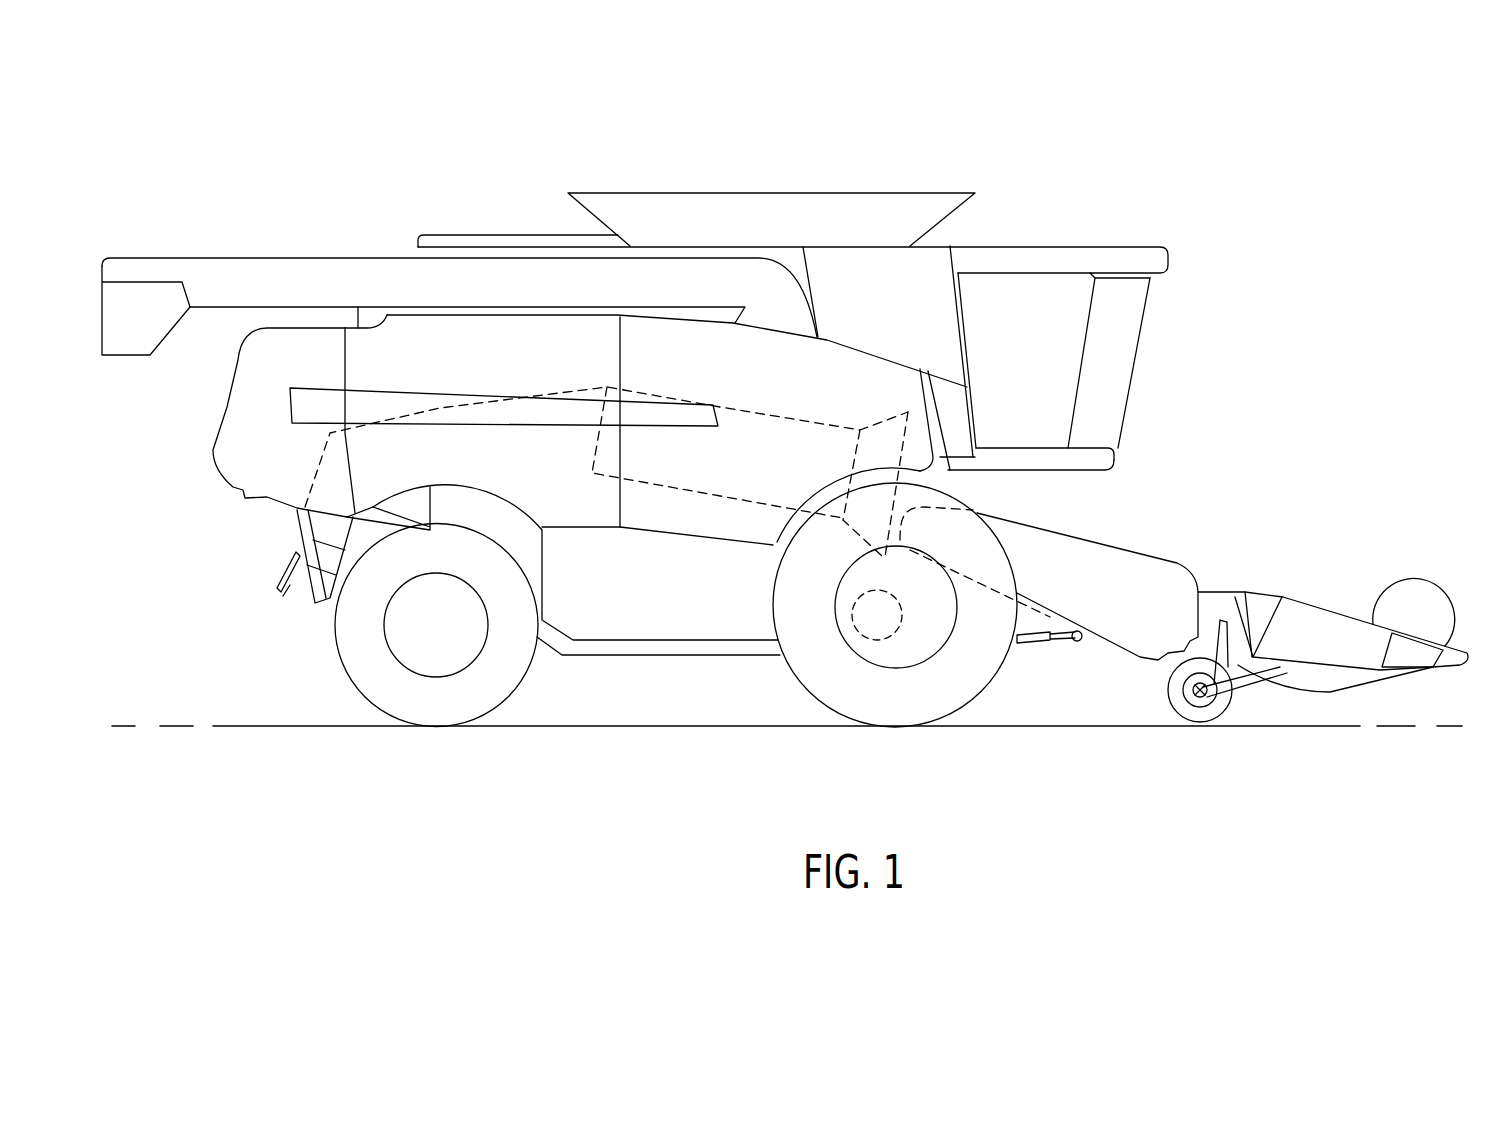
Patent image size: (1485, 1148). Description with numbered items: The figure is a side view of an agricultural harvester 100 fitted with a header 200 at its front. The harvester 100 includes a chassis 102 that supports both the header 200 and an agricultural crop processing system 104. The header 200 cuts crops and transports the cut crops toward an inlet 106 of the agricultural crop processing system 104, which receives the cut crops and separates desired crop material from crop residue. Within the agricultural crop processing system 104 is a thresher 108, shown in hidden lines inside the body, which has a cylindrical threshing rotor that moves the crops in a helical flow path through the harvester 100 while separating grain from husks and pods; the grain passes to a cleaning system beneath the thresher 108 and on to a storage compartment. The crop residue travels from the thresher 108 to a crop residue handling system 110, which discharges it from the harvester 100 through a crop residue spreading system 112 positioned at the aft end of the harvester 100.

The agricultural harvester 100 is at (785, 457).
The chassis 102 is at (596, 665).
The agricultural crop processing system 104 is at (760, 383).
The inlet 106 is at (985, 505).
The thresher 108 is at (767, 412).
The crop residue handling system 110 is at (397, 377).
The crop residue spreading system 112 is at (277, 567).
The header 200 is at (1370, 568).